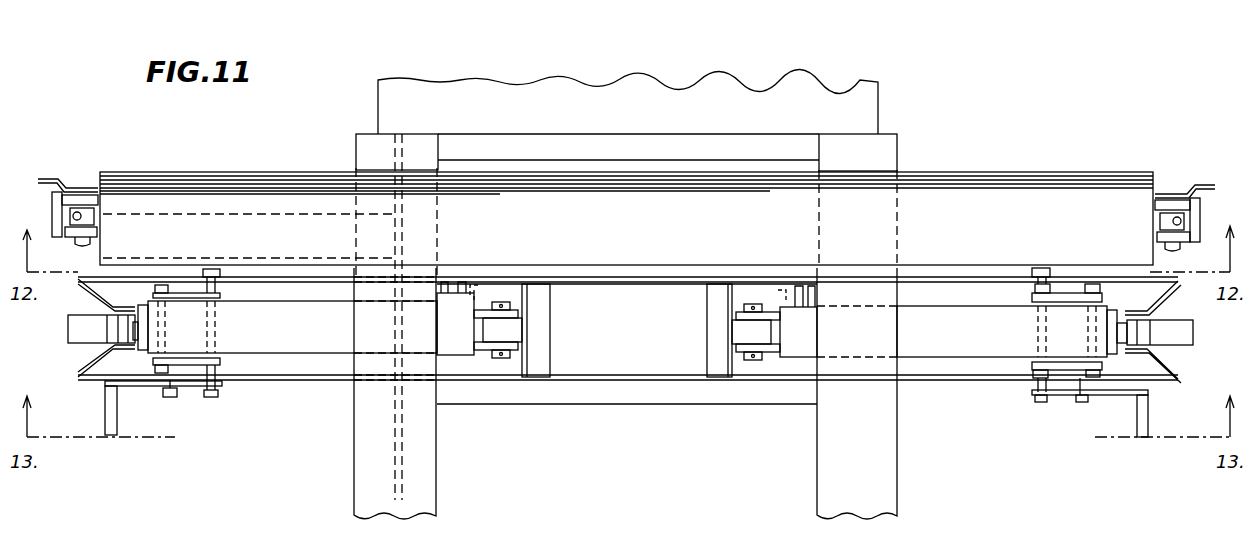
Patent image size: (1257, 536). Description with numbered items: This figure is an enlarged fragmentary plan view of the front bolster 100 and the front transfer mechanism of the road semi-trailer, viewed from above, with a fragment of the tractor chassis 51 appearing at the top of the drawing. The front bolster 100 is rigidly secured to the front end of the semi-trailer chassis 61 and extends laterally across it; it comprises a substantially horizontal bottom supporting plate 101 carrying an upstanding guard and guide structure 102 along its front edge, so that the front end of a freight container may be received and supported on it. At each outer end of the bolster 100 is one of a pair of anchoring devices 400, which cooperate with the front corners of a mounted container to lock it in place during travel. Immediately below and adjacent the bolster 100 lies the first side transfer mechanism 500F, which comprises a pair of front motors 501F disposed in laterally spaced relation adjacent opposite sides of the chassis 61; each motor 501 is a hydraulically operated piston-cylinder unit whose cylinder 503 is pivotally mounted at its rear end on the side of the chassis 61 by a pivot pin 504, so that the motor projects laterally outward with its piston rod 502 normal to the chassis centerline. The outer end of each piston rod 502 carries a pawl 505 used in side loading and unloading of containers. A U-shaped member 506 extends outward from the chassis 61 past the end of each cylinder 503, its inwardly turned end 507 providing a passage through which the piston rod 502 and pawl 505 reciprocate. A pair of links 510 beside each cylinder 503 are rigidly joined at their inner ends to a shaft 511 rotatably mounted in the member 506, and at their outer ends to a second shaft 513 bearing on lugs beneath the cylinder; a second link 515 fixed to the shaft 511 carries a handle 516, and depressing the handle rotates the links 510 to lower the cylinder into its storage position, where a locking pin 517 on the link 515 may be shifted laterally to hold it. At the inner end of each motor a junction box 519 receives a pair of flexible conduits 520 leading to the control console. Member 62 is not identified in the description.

The chassis 51 is at (657, 80).
The front bolster 100 is at (626, 172).
The bottom supporting plate 101 is at (634, 218).
The guard and guide structure 102 is at (946, 172).
The anchoring device 400 is at (60, 173).
The chassis 61 is at (625, 326).
The column web 62 is at (428, 445).
The U-shaped member 506 is at (283, 278).
The piston rod 502 is at (86, 290).
The second laterally extending shaft 513 is at (1151, 298).
The inwardly turned end 507 is at (1179, 286).
The motor 501 is at (545, 363).
The front motor 501F is at (1018, 375).
The cylinder 503 is at (320, 318).
The pawl 505 is at (78, 340).
The link 510 is at (222, 296).
The shaft 511 is at (222, 372).
The locking pin 517 is at (1078, 401).
The second link 515 is at (138, 390).
The handle 516 is at (112, 408).
The first side transfer mechanism 500F is at (920, 405).
The pivot pin 504 is at (493, 350).
The flexible conduit 520 is at (463, 281).
The junction box 519 is at (472, 296).